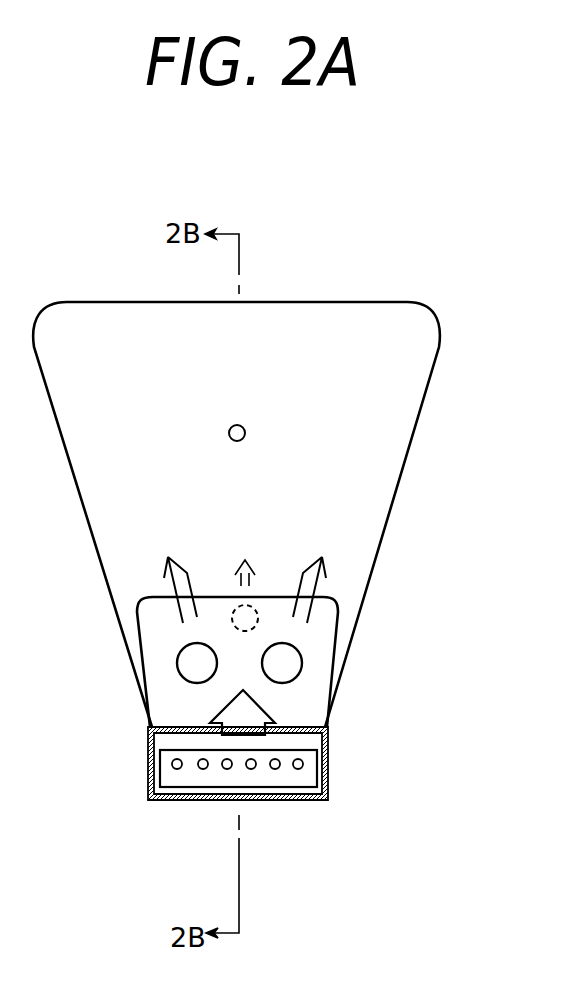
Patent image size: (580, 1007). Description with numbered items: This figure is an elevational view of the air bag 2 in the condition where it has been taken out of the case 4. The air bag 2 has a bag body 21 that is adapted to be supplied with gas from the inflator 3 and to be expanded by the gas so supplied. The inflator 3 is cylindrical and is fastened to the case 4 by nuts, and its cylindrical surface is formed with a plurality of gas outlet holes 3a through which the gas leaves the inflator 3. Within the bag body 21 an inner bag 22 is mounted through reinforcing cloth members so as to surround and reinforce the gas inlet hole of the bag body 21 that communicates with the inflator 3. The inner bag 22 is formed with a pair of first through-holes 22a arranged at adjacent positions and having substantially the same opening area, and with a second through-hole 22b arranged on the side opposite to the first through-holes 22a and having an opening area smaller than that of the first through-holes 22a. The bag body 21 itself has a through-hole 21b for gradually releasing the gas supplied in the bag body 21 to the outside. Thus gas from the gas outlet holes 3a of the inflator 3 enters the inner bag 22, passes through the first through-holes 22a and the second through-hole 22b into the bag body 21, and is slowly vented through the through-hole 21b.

The air bag 2 is at (267, 572).
The bag body 21 is at (398, 428).
The through-hole 21b is at (243, 426).
The inner bag 22 is at (320, 648).
The first through-holes 22a is at (188, 667).
The second through-hole 22b is at (258, 622).
The inflator 3 is at (260, 775).
The gas outlet holes 3a is at (227, 770).
The case 4 is at (330, 776).